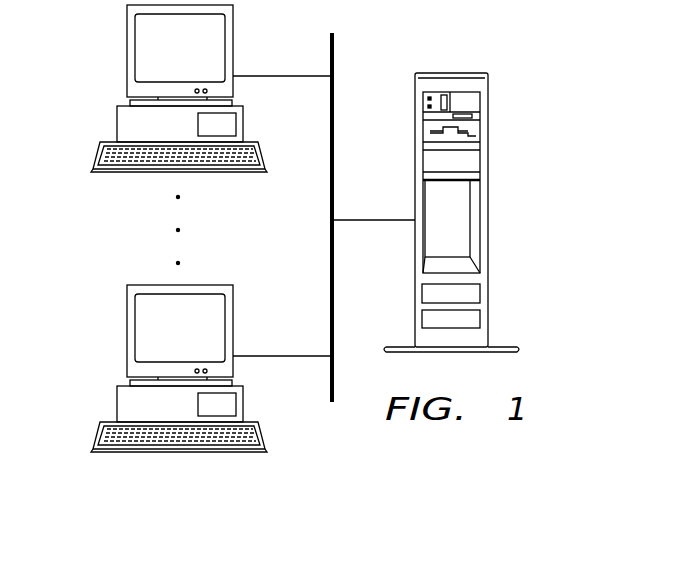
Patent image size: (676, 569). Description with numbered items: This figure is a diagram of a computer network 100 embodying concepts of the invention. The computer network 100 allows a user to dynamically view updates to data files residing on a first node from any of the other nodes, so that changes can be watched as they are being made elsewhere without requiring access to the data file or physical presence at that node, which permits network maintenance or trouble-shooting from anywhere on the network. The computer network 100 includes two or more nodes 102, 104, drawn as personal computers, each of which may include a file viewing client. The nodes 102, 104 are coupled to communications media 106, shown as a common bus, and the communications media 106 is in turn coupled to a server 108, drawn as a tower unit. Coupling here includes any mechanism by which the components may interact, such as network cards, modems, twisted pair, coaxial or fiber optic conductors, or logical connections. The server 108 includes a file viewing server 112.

The computer network 100 is at (539, 51).
The node 102 is at (127, 52).
The node 104 is at (127, 328).
The communications media 106 is at (334, 304).
The server 108 is at (448, 73).
The file viewing server 112 is at (480, 295).